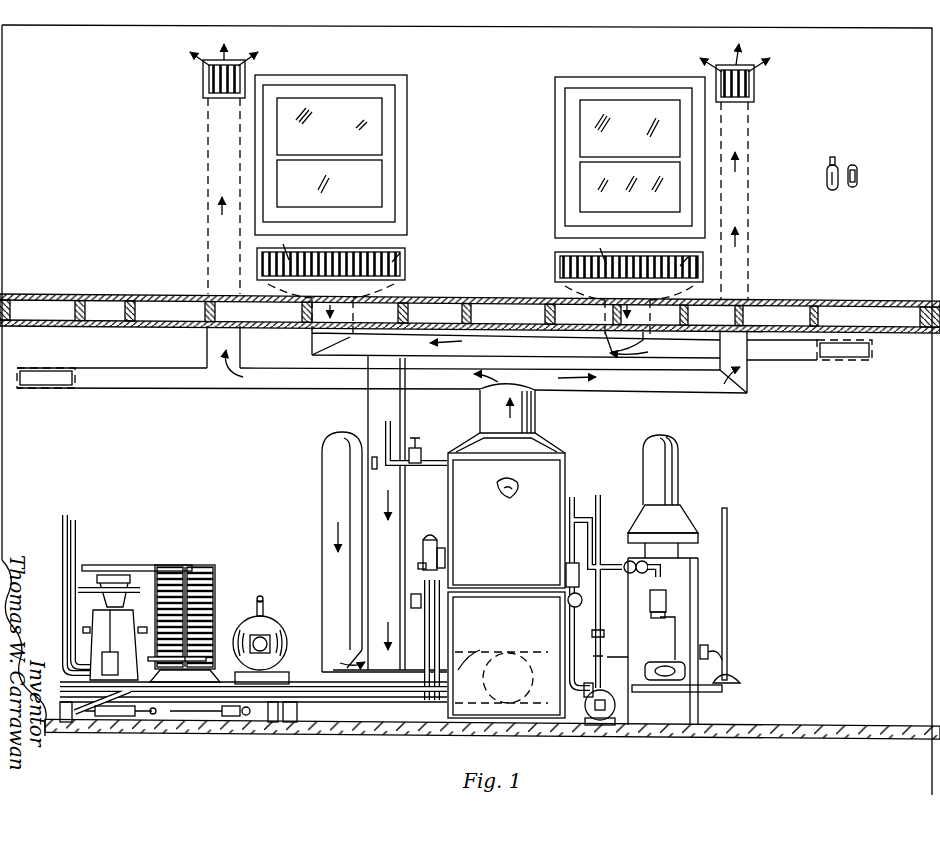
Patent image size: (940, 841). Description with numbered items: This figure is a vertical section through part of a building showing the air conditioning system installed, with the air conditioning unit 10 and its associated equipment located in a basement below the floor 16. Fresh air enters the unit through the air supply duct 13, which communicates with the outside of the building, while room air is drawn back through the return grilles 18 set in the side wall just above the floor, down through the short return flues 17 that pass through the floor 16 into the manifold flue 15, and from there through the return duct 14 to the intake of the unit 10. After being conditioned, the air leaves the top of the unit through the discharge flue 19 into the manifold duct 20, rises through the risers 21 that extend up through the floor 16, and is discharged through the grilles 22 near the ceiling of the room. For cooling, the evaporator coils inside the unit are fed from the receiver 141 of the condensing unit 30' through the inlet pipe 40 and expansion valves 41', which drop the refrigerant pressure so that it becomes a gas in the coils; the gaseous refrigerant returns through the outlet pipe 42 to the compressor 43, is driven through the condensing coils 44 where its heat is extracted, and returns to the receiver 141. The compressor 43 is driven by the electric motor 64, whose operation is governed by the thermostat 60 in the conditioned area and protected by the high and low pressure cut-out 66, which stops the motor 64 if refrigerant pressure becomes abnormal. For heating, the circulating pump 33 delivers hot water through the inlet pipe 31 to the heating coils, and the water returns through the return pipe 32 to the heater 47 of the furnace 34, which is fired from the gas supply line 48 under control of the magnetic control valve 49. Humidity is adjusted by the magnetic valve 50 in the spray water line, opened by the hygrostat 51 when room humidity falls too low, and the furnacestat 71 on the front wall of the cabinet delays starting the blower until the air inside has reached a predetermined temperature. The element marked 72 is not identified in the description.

The air conditioning unit 10 is at (506, 595).
The air supply duct 13 is at (322, 532).
The return duct 14 is at (414, 512).
The manifold flue 15 is at (507, 345).
The floor 16 is at (124, 293).
The return flues 17 is at (312, 344).
The return grilles 18 is at (257, 260).
The discharge flue 19 is at (536, 414).
The manifold duct 20 is at (153, 380).
The risers 21 is at (207, 168).
The grilles 22 is at (205, 84).
The condensing unit 30' is at (184, 607).
The inlet pipe 31 is at (578, 623).
The return pipe 32 is at (621, 567).
The circulating pump 33 is at (614, 706).
The furnace 34 is at (702, 580).
The inlet pipe 40 is at (388, 625).
The expansion valves 41' is at (457, 552).
The outlet pipe 42 is at (405, 625).
The compressor 43 is at (143, 565).
The condensing coils 44 is at (213, 595).
The heater 47 is at (698, 609).
The gas supply line 48 is at (728, 541).
The magnetic control valve 49 is at (706, 652).
The magnetic valve 50 is at (422, 452).
The hygrostat 51 is at (858, 173).
The electric thermostat 60 is at (835, 162).
The electric motor 64 is at (283, 623).
The high and low pressure cut-out 66 is at (411, 601).
The furnacestat 71 is at (521, 498).
The base 72 is at (405, 700).
The receiver 141 is at (166, 715).